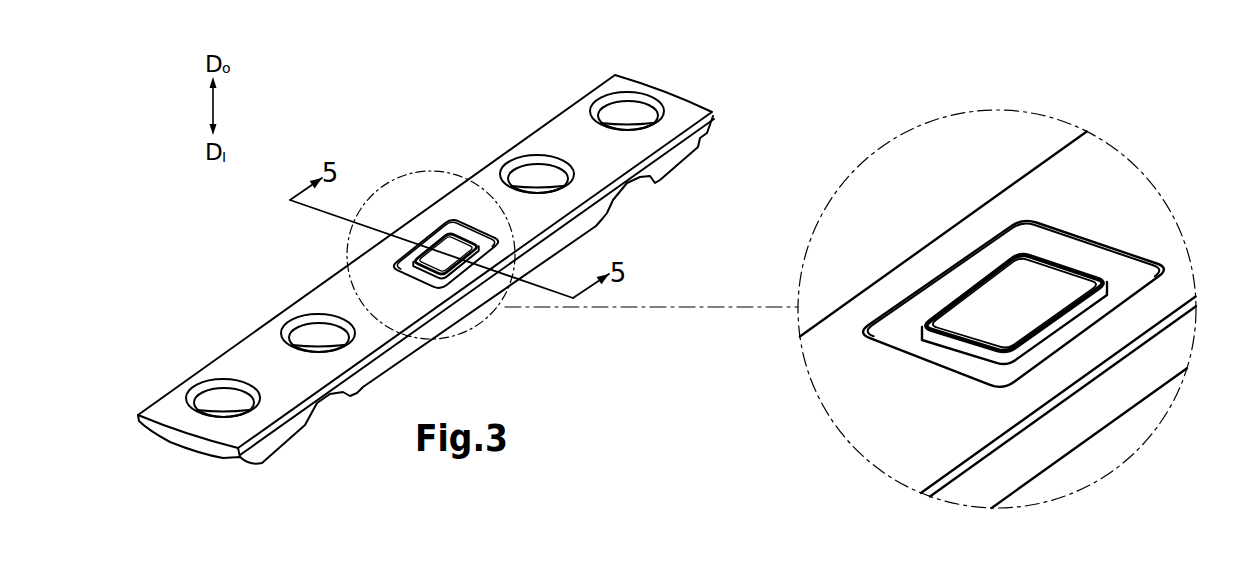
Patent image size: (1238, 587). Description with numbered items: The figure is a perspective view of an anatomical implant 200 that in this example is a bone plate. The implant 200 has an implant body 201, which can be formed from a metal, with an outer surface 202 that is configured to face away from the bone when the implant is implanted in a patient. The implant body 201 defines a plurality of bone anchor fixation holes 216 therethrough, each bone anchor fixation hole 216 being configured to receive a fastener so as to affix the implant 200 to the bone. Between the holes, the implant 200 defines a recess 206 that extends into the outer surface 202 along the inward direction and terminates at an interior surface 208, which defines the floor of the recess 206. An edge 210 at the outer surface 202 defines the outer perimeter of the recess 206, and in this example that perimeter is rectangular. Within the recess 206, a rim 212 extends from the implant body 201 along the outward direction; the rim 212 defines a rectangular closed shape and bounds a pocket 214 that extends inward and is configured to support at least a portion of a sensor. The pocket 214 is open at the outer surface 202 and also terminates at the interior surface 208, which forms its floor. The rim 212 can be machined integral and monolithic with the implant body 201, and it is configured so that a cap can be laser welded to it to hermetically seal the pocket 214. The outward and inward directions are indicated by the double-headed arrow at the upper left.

The anatomical implant 200 is at (210, 273).
The implant body 201 is at (262, 357).
The outer surface 202 is at (563, 138).
The recess 206 is at (388, 272).
The interior surface 208 is at (453, 230).
The edge 210 is at (887, 310).
The rim 212 is at (427, 250).
The pocket 214 is at (432, 262).
The bone anchor fixation holes 216 is at (533, 177).